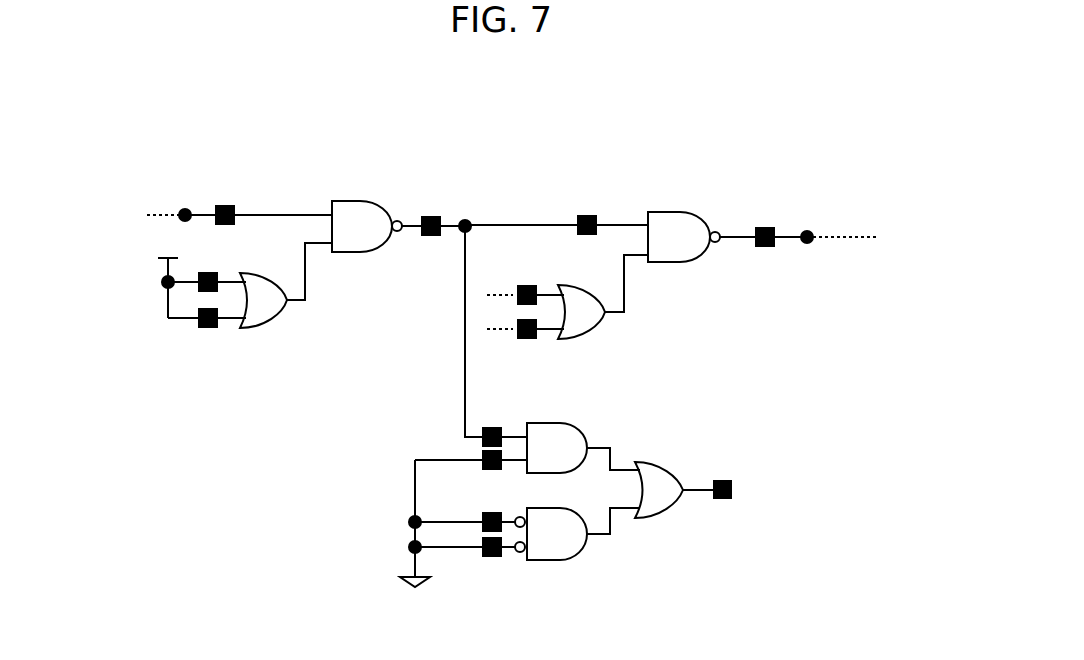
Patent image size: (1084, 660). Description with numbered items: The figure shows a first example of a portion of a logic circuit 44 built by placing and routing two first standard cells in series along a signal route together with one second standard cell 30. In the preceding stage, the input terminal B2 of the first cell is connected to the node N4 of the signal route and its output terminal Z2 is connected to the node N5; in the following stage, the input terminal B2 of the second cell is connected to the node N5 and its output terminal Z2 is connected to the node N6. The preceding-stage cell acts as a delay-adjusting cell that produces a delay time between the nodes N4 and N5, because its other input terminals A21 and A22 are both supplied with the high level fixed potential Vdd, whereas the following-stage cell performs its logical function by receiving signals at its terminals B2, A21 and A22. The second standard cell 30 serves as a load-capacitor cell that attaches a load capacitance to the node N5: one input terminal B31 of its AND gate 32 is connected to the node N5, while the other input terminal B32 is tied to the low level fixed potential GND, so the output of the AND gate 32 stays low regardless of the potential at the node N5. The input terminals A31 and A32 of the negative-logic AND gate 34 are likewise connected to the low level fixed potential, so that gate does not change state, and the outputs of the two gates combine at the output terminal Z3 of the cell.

The logic circuit 44 is at (747, 103).
The second standard cell 30 is at (622, 550).
The AND gate 32 is at (573, 423).
The negative-logic AND gate 34 is at (559, 561).
The node N4 is at (174, 202).
The node N5 is at (470, 211).
The node N6 is at (835, 223).
The input terminal B2 is at (404, 208).
The output terminal Z2 is at (594, 218).
The output terminal Z3 is at (739, 490).
The input terminal A21 is at (376, 277).
The input terminal A22 is at (376, 338).
The input terminal B31 is at (491, 425).
The input terminal B32 is at (491, 473).
The input terminal A31 is at (497, 510).
The input terminal A32 is at (497, 562).
The high level fixed potential Vdd is at (168, 275).
The low level fixed potential GND is at (415, 539).